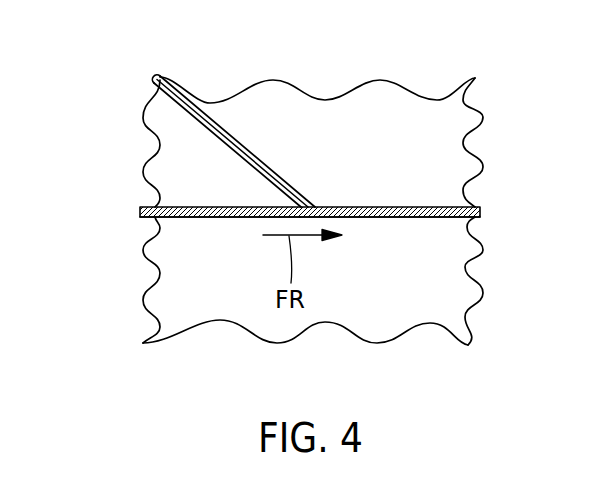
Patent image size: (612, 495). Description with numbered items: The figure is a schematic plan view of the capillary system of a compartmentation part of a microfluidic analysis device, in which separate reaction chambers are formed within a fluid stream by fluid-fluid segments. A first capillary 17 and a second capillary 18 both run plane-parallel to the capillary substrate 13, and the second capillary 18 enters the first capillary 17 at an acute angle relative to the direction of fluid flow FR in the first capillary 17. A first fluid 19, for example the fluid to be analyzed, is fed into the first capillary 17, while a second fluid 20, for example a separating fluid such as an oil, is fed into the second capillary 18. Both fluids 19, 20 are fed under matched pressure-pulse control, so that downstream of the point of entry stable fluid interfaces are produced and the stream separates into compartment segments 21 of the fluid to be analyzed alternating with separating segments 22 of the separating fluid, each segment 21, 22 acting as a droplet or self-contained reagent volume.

The capillary substrate 13 is at (425, 290).
The first capillary 17 is at (210, 207).
The second capillary 18 is at (197, 117).
The first fluid 19 is at (248, 217).
The second fluid 20 is at (263, 160).
The compartment segment 21 is at (400, 207).
The separating segment 22 is at (368, 217).